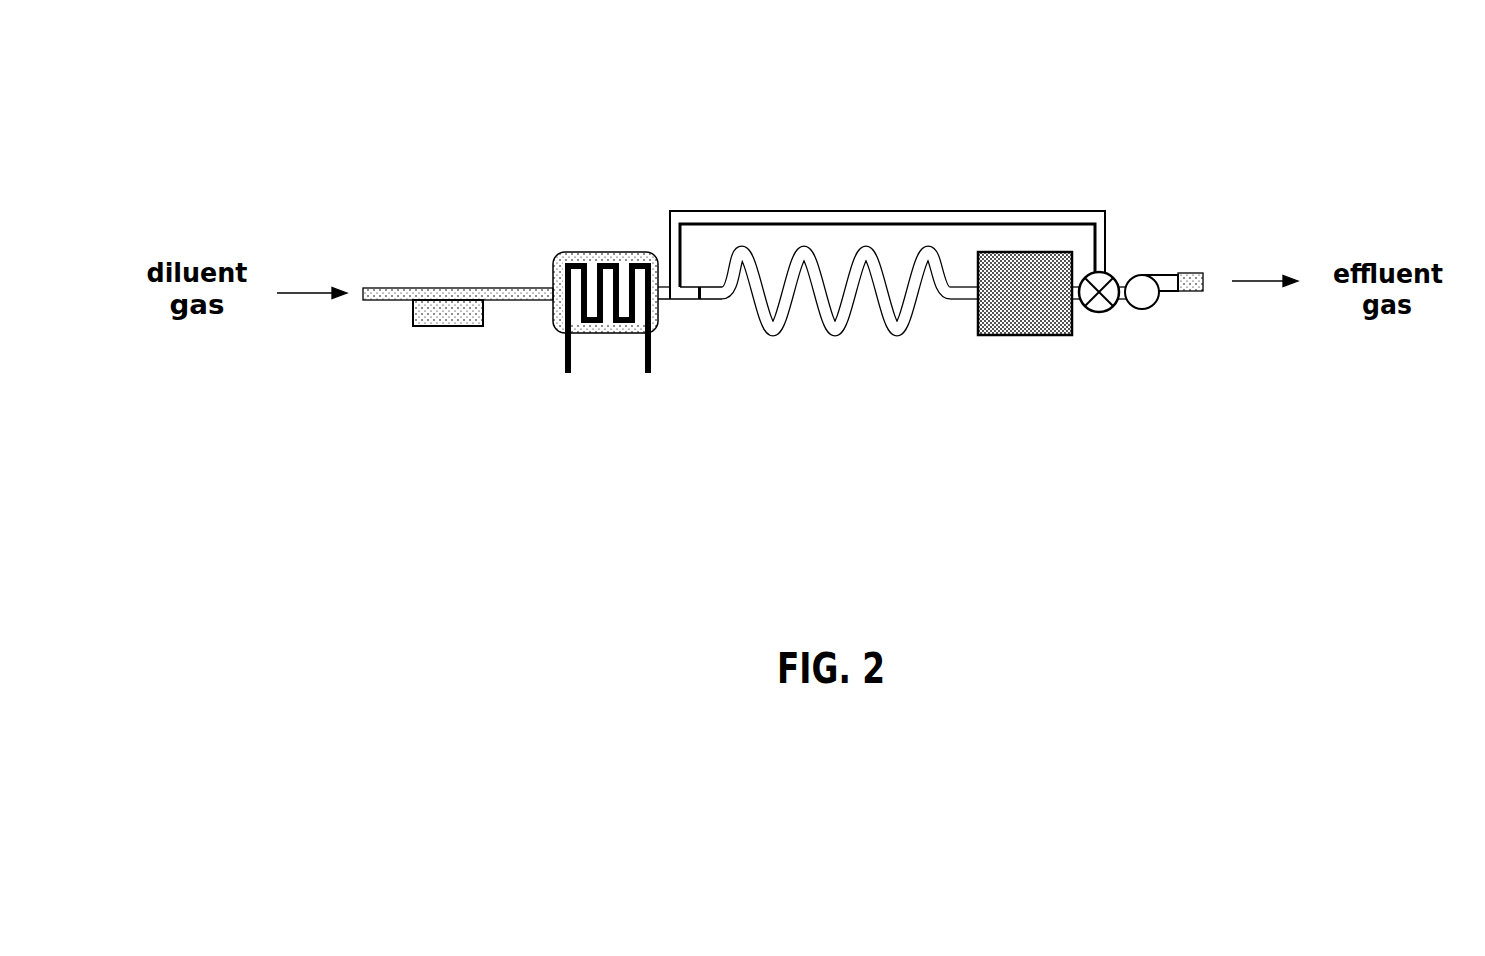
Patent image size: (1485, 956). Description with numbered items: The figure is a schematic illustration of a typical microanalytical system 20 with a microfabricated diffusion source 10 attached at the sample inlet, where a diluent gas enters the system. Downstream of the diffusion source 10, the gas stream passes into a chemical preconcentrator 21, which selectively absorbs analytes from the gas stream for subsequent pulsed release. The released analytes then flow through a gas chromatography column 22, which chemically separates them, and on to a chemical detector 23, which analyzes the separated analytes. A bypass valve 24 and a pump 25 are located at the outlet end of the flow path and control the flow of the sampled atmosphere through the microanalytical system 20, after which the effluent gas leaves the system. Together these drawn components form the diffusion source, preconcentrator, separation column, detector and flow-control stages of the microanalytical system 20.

The microanalytical system 20 is at (843, 131).
The microfabricated diffusion source 10 is at (460, 326).
The chemical preconcentrator 21 is at (605, 333).
The gas chromatography column 22 is at (832, 340).
The chemical detector 23 is at (1012, 335).
The bypass valve 24 is at (1101, 320).
The pump 25 is at (1152, 308).